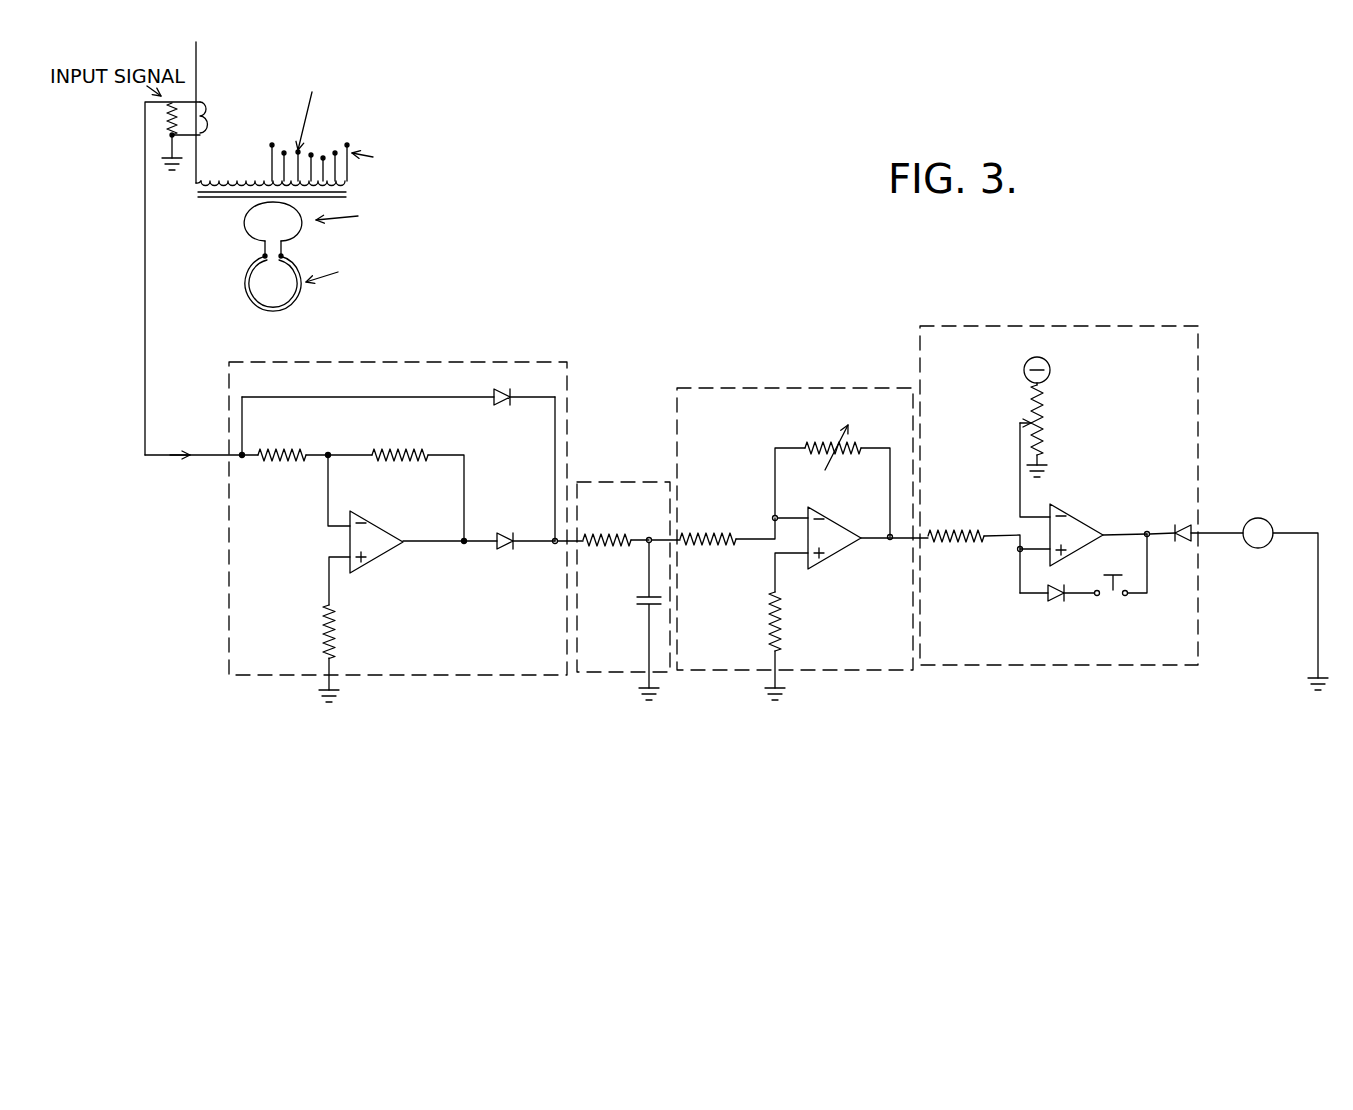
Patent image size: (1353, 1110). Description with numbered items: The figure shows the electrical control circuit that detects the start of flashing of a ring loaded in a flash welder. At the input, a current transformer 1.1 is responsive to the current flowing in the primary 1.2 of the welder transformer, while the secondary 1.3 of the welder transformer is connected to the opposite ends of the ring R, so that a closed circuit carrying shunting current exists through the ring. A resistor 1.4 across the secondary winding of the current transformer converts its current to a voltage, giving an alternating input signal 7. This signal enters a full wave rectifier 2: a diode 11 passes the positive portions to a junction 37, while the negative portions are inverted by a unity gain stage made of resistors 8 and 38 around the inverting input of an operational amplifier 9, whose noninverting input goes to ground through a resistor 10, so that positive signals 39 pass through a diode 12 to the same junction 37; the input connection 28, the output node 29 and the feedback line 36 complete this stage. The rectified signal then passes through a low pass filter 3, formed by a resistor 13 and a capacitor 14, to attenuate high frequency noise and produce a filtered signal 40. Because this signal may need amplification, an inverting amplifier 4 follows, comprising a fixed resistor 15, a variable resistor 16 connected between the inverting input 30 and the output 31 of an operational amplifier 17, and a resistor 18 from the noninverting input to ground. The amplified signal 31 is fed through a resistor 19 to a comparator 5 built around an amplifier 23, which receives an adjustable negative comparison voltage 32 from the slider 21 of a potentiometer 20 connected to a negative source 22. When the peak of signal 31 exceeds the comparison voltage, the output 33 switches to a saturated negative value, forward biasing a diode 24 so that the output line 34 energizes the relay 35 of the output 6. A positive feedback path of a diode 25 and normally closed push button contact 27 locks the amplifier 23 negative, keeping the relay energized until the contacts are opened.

The current transformer 1.1 is at (215, 110).
The primary of the flash welder transformer 1.2 is at (347, 144).
The secondary of the welder transformer 1.3 is at (237, 230).
The resistor 1.4 is at (166, 118).
The ring R is at (300, 302).
The full wave rectifier 2 is at (420, 678).
The low-pass filter 3 is at (626, 678).
The inverting amplifier 4 is at (838, 668).
The comparator 5 is at (1092, 668).
The output 6 is at (1283, 768).
The alternating input signal 7 is at (218, 452).
The resistor 8 is at (285, 452).
The operational amplifier 9 is at (372, 566).
The resistor 10 is at (323, 628).
The diode 11 is at (492, 397).
The diode 12 is at (502, 553).
The resistor 13 is at (607, 533).
The capacitor 14 is at (647, 593).
The fixed resistor 15 is at (713, 532).
The variable resistor 16 is at (814, 443).
The operational amplifier 17 is at (835, 563).
The resistor 18 is at (770, 607).
The input resistor 19 is at (949, 545).
The potentiometer 20 is at (1033, 387).
The slider 21 is at (1016, 427).
The negative source 22 is at (1051, 366).
The amplifier 23 is at (1078, 518).
The diode 24 is at (1188, 524).
The diode 25 is at (1044, 600).
The push button contact 27 is at (1129, 600).
The inverting input line 28 is at (327, 491).
The output node 29 is at (532, 537).
The inverting input 30 is at (790, 516).
The amplified signal 31 is at (889, 545).
The adjustable negative comparison voltage 32 is at (1018, 507).
The output signal 33 is at (1146, 530).
The output line 34 is at (1218, 530).
The relay 35 is at (1268, 520).
The feedback line 36 is at (554, 455).
The junction 37 is at (554, 548).
The resistor 38 is at (396, 450).
The positive signals 39 is at (468, 546).
The signal 40 is at (648, 535).